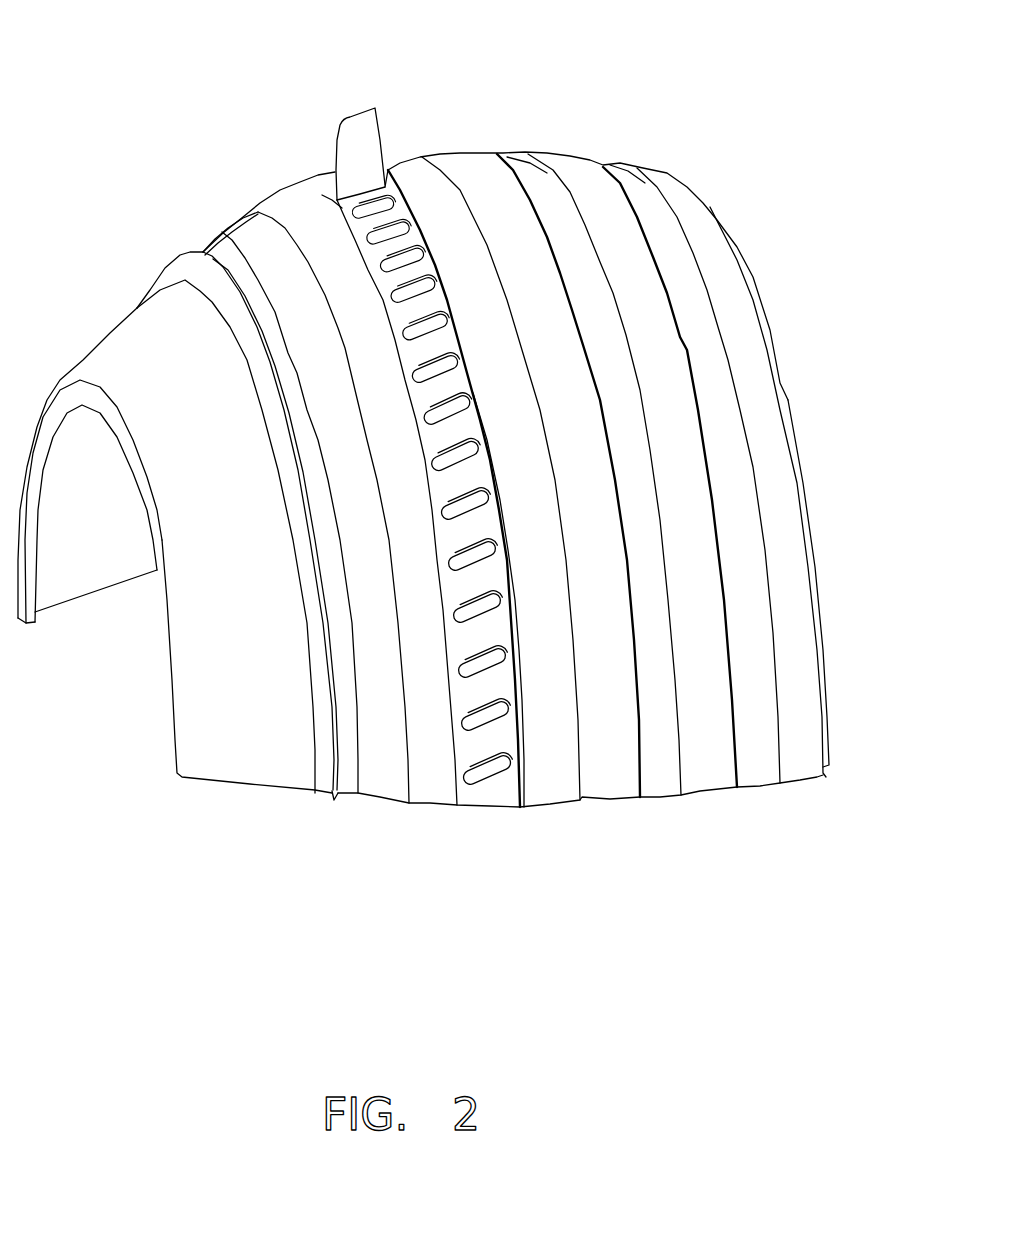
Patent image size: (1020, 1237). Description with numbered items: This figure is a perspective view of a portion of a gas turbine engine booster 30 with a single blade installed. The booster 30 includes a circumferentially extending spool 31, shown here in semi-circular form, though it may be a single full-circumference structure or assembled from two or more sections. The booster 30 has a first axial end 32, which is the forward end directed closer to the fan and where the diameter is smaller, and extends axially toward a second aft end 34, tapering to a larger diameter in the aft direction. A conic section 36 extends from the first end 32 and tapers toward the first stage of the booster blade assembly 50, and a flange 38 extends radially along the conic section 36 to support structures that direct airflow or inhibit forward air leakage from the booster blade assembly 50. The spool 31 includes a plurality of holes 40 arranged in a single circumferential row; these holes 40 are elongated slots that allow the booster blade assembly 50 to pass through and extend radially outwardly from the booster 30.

The gas turbine engine booster 30 is at (436, 428).
The spool 31 is at (616, 148).
The first axial end 32 is at (162, 793).
The second aft end 34 is at (764, 258).
The conic section 36 is at (135, 360).
The flange 38 is at (152, 240).
The holes 40 is at (413, 248).
The booster blade assembly 50 is at (380, 96).